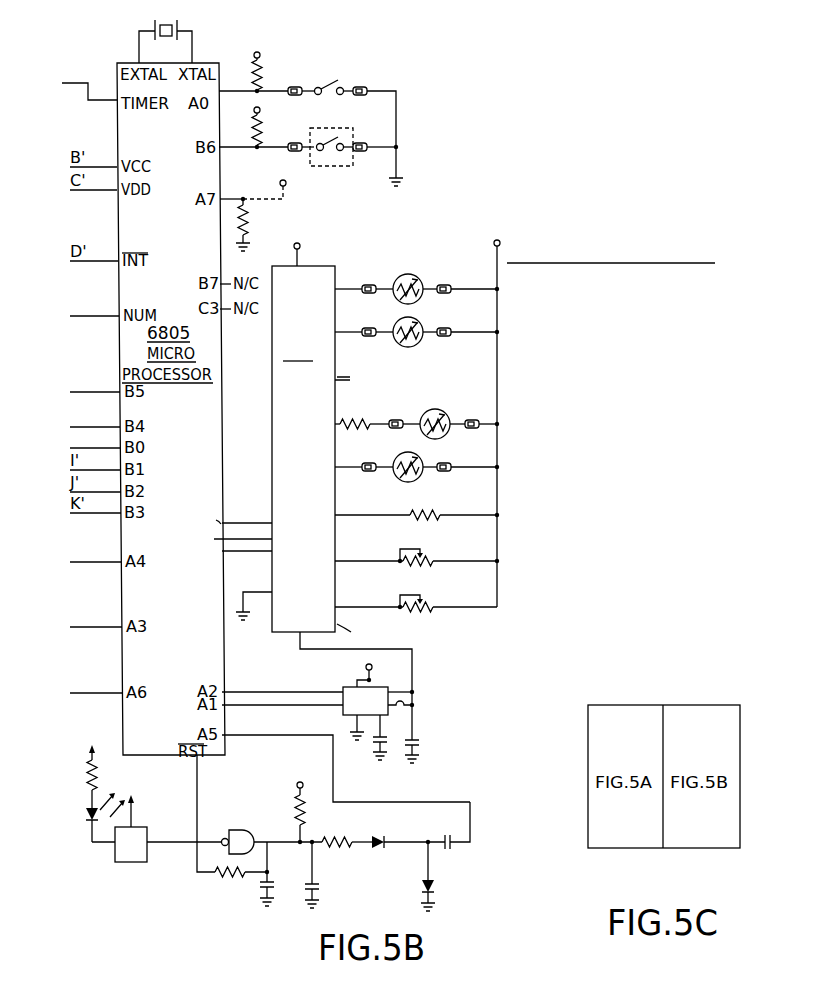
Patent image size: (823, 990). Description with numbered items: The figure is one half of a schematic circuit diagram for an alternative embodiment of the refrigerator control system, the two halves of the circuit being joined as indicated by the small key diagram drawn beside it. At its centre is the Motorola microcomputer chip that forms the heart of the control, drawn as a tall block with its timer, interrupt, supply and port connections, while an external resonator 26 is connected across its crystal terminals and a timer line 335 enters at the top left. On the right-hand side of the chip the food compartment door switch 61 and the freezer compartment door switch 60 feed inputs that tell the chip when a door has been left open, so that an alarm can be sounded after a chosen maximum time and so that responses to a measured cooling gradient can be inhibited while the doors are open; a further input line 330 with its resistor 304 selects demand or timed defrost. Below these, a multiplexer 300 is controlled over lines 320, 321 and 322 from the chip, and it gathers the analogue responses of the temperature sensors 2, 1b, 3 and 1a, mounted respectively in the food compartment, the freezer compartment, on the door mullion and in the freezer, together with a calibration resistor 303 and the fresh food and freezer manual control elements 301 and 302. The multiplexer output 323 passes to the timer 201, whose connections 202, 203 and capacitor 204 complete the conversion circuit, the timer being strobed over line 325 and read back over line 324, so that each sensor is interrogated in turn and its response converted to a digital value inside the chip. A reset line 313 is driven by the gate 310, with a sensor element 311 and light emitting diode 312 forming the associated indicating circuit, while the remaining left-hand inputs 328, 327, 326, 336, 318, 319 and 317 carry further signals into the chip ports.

The ceramic resonator 26 is at (178, 25).
The timer input line 335 is at (107, 105).
The food compartment door switch 61 is at (332, 78).
The freezer compartment door switch 60 is at (328, 128).
The demand/timed defrost select line 330 is at (223, 199).
The pull-down resistor 304 is at (243, 220).
The interrupt input line 328 is at (106, 316).
The B5 input line 327 is at (106, 392).
The B4 input line 326 is at (127, 427).
The B0 input line 336 is at (132, 448).
The A4 input line 318 is at (106, 562).
The A3 input line 319 is at (106, 627).
The A6 input line 317 is at (106, 693).
The 4501 multiplexer 300 is at (475, 431).
The temperature sensor 2 is at (412, 276).
The temperature sensor 1b is at (422, 323).
The temperature sensor 3 is at (444, 413).
The temperature sensor 1a is at (400, 454).
The calibration resistor 303 is at (410, 512).
The fresh food manual control potentiometer 301 is at (425, 549).
The freezer manual control potentiometer 302 is at (425, 595).
The multiplexer control line 320 is at (228, 508).
The multiplexer control line 321 is at (247, 538).
The multiplexer control line 322 is at (260, 551).
The multiplexer output line 323 is at (413, 655).
The timer 201 is at (365, 712).
The strobe line 202 is at (413, 690).
The output line 203 is at (413, 705).
The capacitor 204 is at (415, 736).
The strobe line 325 is at (328, 694).
The output line 324 is at (298, 712).
The reset line 313 is at (226, 738).
The light sensor 311 is at (141, 823).
The NAND gate 310 is at (251, 828).
The light emitting diode 312 is at (92, 842).